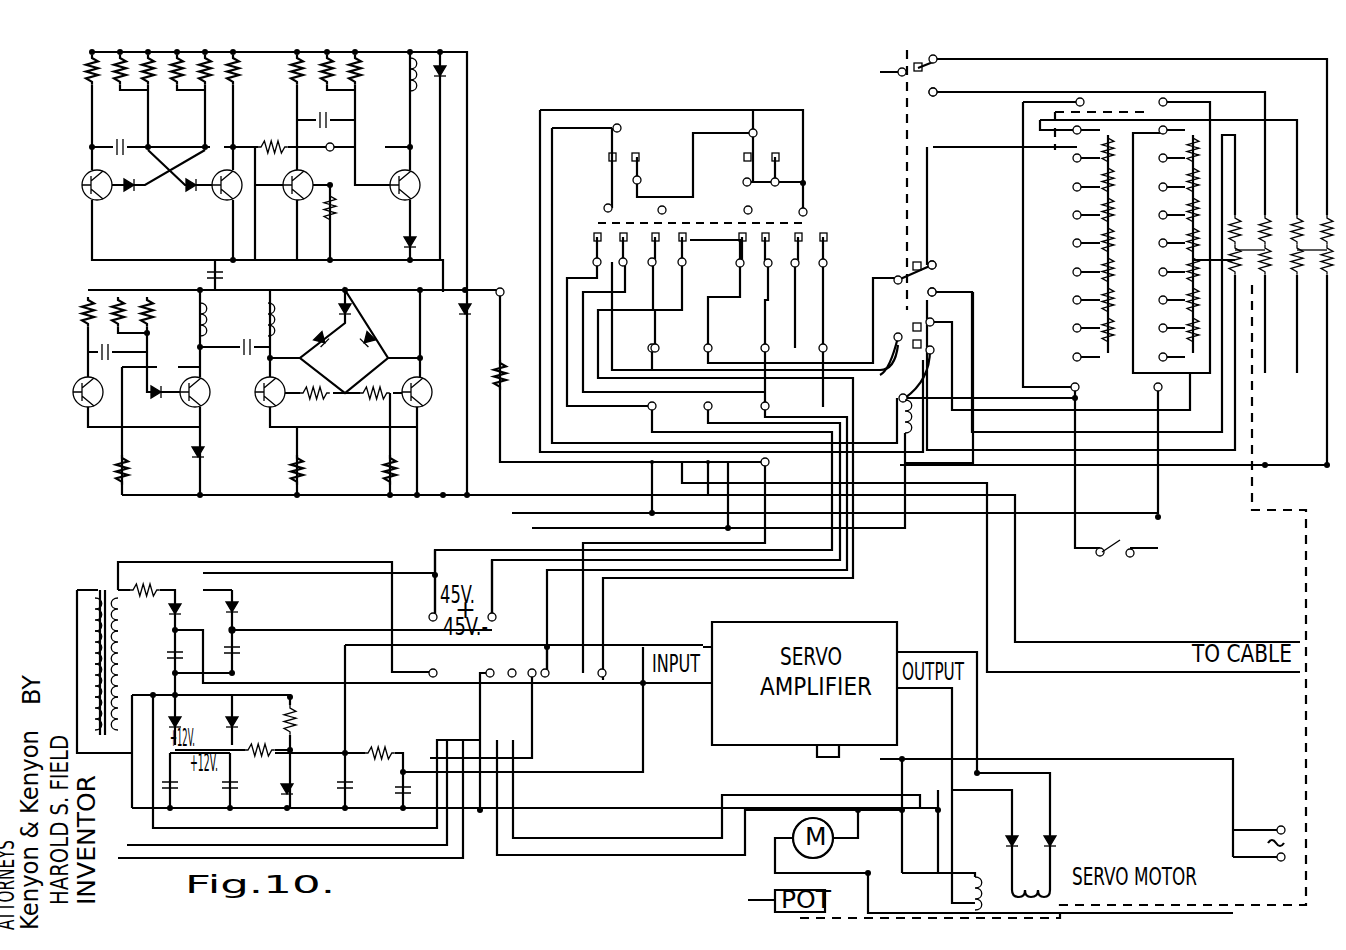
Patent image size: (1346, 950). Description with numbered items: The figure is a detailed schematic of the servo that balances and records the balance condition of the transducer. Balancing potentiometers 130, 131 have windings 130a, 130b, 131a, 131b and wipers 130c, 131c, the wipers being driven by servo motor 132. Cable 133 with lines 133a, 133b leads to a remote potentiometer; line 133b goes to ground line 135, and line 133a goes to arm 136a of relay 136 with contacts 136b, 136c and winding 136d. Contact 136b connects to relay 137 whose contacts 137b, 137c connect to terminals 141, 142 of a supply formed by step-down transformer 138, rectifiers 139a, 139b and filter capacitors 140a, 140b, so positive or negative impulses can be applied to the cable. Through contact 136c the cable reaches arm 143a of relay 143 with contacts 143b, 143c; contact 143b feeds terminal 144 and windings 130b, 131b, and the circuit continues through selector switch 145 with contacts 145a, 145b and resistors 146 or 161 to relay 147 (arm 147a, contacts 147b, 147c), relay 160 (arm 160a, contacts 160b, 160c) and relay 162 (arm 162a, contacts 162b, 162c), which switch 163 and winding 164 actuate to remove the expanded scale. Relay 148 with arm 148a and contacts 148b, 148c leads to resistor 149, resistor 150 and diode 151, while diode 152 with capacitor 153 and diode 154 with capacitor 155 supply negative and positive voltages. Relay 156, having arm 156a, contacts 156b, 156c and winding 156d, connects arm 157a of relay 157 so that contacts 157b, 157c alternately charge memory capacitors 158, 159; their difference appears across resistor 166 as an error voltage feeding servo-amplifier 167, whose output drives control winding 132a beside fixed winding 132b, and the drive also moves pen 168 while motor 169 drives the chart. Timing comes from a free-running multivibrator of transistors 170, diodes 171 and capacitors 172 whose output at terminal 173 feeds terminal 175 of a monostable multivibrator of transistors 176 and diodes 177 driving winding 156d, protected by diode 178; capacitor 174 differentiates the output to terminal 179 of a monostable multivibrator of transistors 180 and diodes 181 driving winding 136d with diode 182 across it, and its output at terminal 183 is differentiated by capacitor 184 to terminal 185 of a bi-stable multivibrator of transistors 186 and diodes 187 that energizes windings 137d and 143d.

The balancing potentiometer 130 is at (1240, 212).
The winding 130a is at (1155, 261).
The winding 130b is at (1268, 120).
The wiper 130c is at (1249, 288).
The balancing potentiometer 131 is at (1302, 212).
The winding 131a is at (1320, 160).
The winding 131b is at (1314, 315).
The wiper 131c is at (1294, 284).
The servo motor 132 is at (1055, 898).
The control winding 132a is at (1035, 882).
The fixed winding 132b is at (980, 870).
The cable 133 is at (1220, 675).
The line 133a is at (1135, 665).
The line 133b is at (1200, 630).
The ground line 135 is at (512, 515).
The relay 136 is at (630, 120).
The arm 136a is at (588, 138).
The contact 136b is at (585, 163).
The contact 136c is at (640, 152).
The winding 136d is at (210, 275).
The relay 137 is at (570, 240).
The contact 137b is at (590, 235).
The contact 137c is at (583, 193).
The winding 137d is at (272, 310).
The step-down transformer 138 is at (72, 600).
The rectifier 139a is at (178, 600).
The rectifier 139b is at (235, 600).
The filter capacitor 140a is at (151, 651).
The filter capacitor 140b is at (245, 652).
The terminal 141 is at (172, 628).
The terminal 142 is at (238, 628).
The relay 143 is at (725, 235).
The arm 143a is at (781, 200).
The contact 143b is at (716, 247).
The contact 143c is at (726, 307).
The winding 143d is at (450, 300).
The terminal 144 is at (1263, 468).
The selector switch 145 is at (1012, 125).
The contact 145a is at (1168, 244).
The contact 145b is at (1072, 244).
The resistors 146 is at (1153, 235).
The relay 147 is at (940, 350).
The arm 147a is at (879, 393).
The contact 147b is at (935, 320).
The contact 147c is at (935, 355).
The relay 148 is at (815, 215).
The arm 148a is at (828, 195).
The contact 148b is at (780, 295).
The contact 148c is at (815, 240).
The resistor 149 is at (292, 732).
The resistor 150 is at (261, 730).
The diode 151 is at (292, 788).
The diode 152 is at (178, 718).
The capacitor 153 is at (178, 790).
The diode 154 is at (236, 720).
The capacitor 155 is at (238, 790).
The relay 156 is at (770, 125).
The arm 156a is at (752, 130).
The contact 156b is at (752, 160).
The contact 156c is at (778, 150).
The winding 156d is at (388, 79).
The relay 157 is at (650, 195).
The arm 157a is at (723, 183).
The contact 157b is at (638, 208).
The contact 157c is at (655, 300).
The memory capacitor 158 is at (350, 790).
The memory capacitor 159 is at (408, 795).
The relay 160 is at (942, 225).
The arm 160a is at (895, 280).
The contact 160b is at (938, 262).
The contact 160c is at (966, 270).
The resistors 161 is at (1075, 270).
The relay 162 is at (900, 50).
The arm 162a is at (912, 72).
The contact 162b is at (960, 77).
The contact 162c is at (920, 88).
The switch 163 is at (1115, 560).
The winding 164 is at (902, 430).
The resistor 166 is at (375, 750).
The servo-amplifier 167 is at (825, 740).
The pen 168 is at (772, 900).
The motor 169 is at (808, 818).
The transistors 170 is at (82, 192).
The diodes 171 is at (135, 192).
The capacitors 172 is at (123, 142).
The terminal 173 is at (270, 145).
The capacitor 174 is at (205, 205).
The input terminal 175 is at (330, 120).
The transistors 176 is at (292, 200).
The diodes 177 is at (425, 213).
The diode 178 is at (445, 74).
The input terminal 179 is at (100, 350).
The transistors 180 is at (75, 403).
The diodes 181 is at (195, 455).
The diode 182 is at (205, 310).
The terminal 183 is at (247, 355).
The capacitor 184 is at (248, 395).
The terminal 185 is at (350, 320).
The transistors 186 is at (318, 397).
The diodes 187 is at (345, 351).